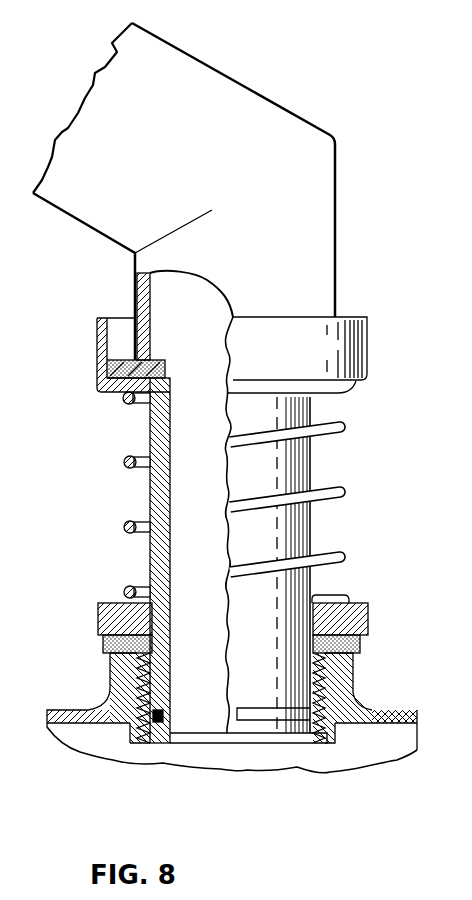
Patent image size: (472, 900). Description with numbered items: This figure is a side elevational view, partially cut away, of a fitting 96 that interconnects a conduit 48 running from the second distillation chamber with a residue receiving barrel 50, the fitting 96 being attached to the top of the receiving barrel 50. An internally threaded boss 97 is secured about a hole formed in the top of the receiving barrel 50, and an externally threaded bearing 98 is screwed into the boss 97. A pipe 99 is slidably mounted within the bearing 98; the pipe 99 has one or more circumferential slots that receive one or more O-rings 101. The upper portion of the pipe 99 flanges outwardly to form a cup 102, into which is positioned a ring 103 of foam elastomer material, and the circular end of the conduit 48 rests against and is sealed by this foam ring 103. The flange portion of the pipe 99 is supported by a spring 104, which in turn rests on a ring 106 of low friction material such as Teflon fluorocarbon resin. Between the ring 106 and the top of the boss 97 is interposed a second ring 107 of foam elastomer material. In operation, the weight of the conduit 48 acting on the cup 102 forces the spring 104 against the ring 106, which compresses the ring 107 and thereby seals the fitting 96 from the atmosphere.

The conduit 48 is at (282, 110).
The receiving barrel 50 is at (62, 712).
The fitting 96 is at (125, 483).
The boss 97 is at (343, 675).
The bearing 98 is at (327, 742).
The pipe 99 is at (165, 727).
The O-ring 101 is at (262, 715).
The cup 102 is at (365, 317).
The foam ring 103 is at (117, 360).
The spring 104 is at (336, 498).
The ring of low friction material 106 is at (105, 603).
The second ring of foam elastomer material 107 is at (103, 650).